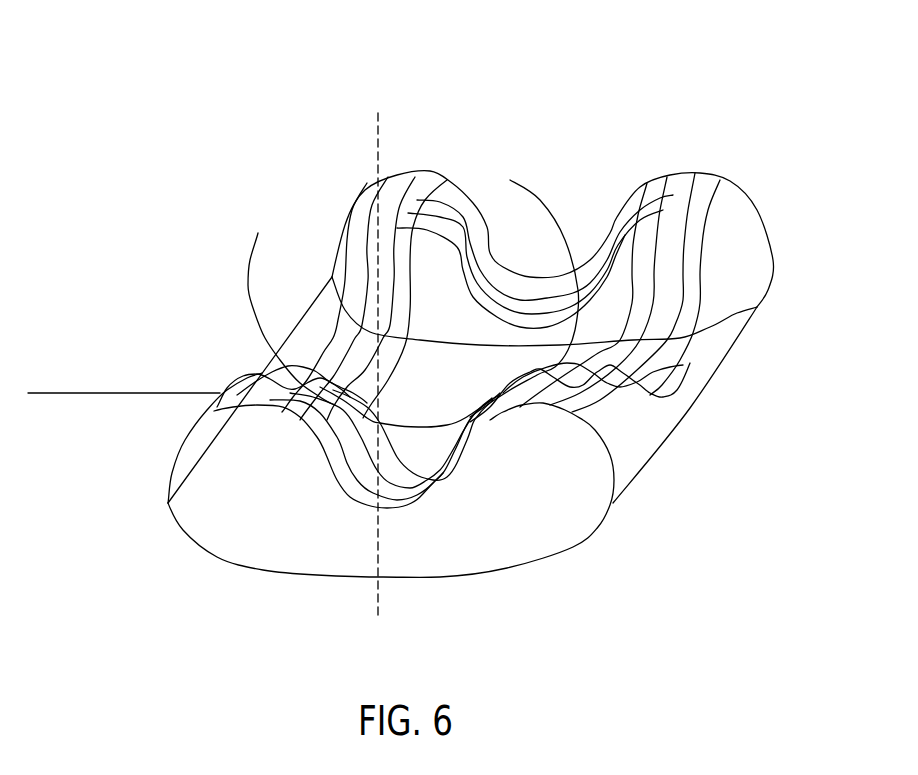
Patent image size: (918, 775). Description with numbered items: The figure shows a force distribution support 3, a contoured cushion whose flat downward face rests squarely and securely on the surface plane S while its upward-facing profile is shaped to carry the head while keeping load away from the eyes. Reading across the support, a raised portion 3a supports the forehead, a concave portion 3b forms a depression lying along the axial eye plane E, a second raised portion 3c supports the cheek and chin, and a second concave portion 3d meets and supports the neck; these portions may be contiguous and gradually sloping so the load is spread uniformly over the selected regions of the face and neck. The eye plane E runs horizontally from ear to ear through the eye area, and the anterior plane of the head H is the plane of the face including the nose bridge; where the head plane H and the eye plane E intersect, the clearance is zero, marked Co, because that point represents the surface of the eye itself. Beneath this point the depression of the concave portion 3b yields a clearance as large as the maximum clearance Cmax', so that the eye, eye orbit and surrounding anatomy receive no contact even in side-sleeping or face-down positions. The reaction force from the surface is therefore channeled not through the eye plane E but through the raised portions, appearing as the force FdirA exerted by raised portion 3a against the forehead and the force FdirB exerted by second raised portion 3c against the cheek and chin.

The force distribution support 3 is at (667, 178).
The raised portion 3a is at (253, 543).
The concave portion 3b is at (357, 447).
The second raised portion 3c is at (510, 543).
The second concave portion 3d is at (677, 367).
The axial eye plane E is at (378, 353).
The anterior plane of the head H is at (255, 252).
The surface plane S is at (123, 395).
The zero clearance Co is at (524, 287).
The maximum clearance Cmax' is at (339, 566).
The reaction force exerted by raised portion 3a FdirA is at (292, 410).
The reaction force exerted by raised portion 3c FdirB is at (580, 409).